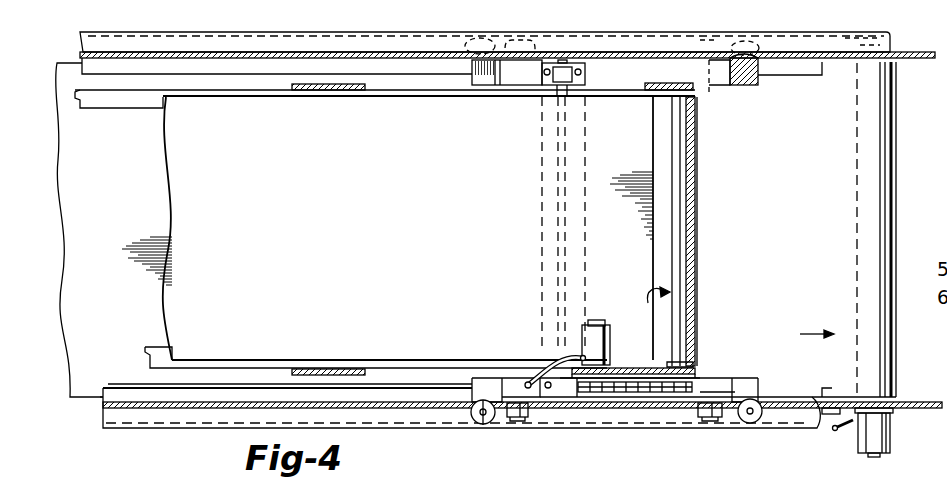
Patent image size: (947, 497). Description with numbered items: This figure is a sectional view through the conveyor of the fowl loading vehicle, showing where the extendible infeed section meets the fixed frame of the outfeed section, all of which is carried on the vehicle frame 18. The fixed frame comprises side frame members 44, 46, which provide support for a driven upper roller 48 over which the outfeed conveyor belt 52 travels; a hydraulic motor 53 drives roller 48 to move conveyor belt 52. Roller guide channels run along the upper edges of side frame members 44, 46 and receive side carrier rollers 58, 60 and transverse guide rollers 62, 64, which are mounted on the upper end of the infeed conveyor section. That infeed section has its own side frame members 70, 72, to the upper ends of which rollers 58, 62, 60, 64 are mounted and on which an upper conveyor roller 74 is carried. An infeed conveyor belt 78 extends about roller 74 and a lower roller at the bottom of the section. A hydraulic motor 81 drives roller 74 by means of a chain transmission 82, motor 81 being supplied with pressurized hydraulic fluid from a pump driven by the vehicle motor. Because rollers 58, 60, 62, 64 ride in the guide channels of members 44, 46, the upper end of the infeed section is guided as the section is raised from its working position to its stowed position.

The side frame member 44 is at (287, 57).
The side frame member 70 is at (113, 98).
The transverse guide roller 62 is at (460, 44).
The side carrier roller 58 is at (530, 60).
The driven upper roller 48 is at (866, 140).
The frame 18 is at (698, 175).
The infeed conveyor belt 78 is at (682, 232).
The upper conveyor roller 74 is at (661, 241).
The conveyor belt 52 is at (785, 273).
The side frame member 72 is at (153, 350).
The side frame member 46 is at (409, 410).
The transverse guide roller 64 is at (480, 428).
The side carrier roller 60 is at (515, 420).
The chain transmission 82 is at (618, 392).
The hydraulic motor 81 is at (606, 338).
The hydraulic motor 53 is at (893, 442).